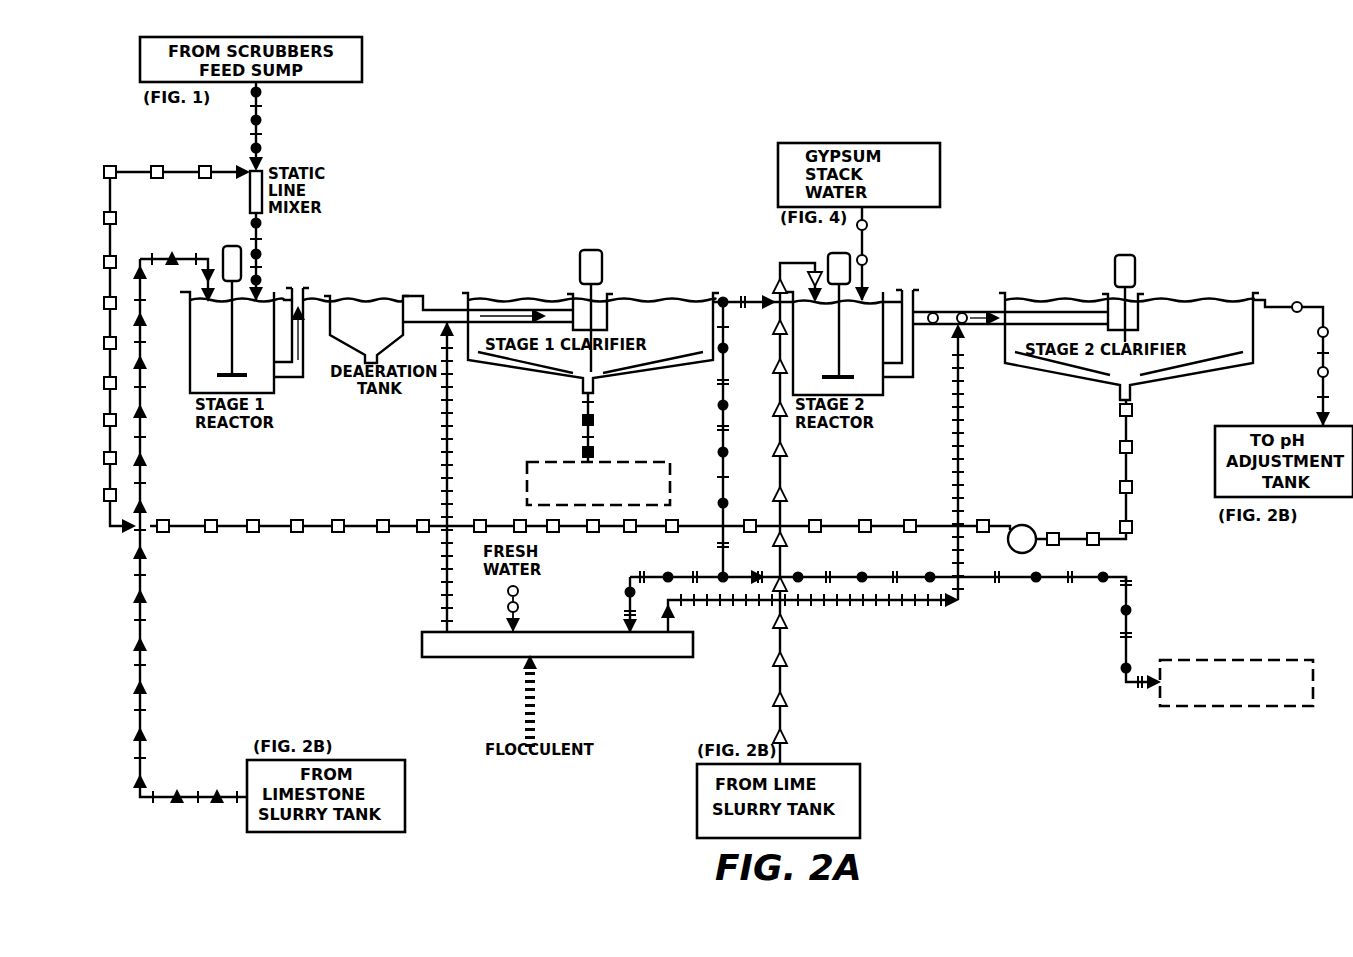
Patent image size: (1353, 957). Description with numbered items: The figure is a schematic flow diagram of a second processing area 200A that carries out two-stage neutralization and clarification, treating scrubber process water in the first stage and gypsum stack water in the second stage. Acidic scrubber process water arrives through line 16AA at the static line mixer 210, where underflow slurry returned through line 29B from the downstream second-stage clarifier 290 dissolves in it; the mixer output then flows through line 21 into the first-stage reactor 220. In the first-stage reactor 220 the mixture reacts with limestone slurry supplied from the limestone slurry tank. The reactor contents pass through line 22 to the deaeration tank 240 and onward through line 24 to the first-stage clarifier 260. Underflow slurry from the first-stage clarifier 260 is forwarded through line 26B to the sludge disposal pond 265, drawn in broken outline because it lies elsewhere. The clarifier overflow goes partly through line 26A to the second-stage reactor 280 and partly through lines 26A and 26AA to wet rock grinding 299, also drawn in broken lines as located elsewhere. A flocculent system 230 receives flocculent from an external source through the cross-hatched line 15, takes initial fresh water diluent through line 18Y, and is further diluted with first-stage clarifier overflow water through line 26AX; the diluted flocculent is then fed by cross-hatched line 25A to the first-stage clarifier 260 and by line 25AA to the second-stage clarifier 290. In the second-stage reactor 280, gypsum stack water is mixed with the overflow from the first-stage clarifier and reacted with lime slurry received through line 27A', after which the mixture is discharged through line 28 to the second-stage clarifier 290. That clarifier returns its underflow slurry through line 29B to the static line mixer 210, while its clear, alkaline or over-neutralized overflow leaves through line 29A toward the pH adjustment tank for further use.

The scrubber process water feed line 16AA is at (262, 92).
The static line mixer 210 is at (248, 196).
The mixer output line 21 is at (251, 238).
The stage 2 clarifier underflow slurry line 29B is at (192, 178).
The stage 1 reactor 220 is at (192, 394).
The stage 1 reactor outlet line 22 is at (310, 357).
The deaeration tank 240 is at (393, 346).
The deaeration tank outlet line 24 is at (530, 300).
The stage 1 clarifier 260 is at (530, 374).
The stage 1 clarifier underflow line 26B is at (581, 422).
The sludge disposal pond 265 is at (544, 462).
The stage 1 clarifier overflow line 26A is at (744, 265).
The overflow line to wet rock grinding 26AA is at (720, 379).
The second processing area 200A is at (671, 242).
The lime slurry line 27A' is at (801, 496).
The stage 2 reactor 280 is at (882, 394).
The stage 2 reactor discharge line 28 is at (945, 310).
The stage 2 clarifier 290 is at (1068, 372).
The stage 2 clarifier overflow line 29A is at (1314, 306).
The diluted flocculent line to stage 1 clarifier 25A is at (444, 564).
The diluted flocculent line to stage 2 clarifier 25AA is at (813, 606).
The clarifier overflow dilution line 26AX is at (627, 580).
The fresh water line 18Y is at (519, 597).
The flocculent system 230 is at (423, 656).
The flocculent supply line 15 is at (534, 695).
The wet rock grinding 299 is at (1163, 693).